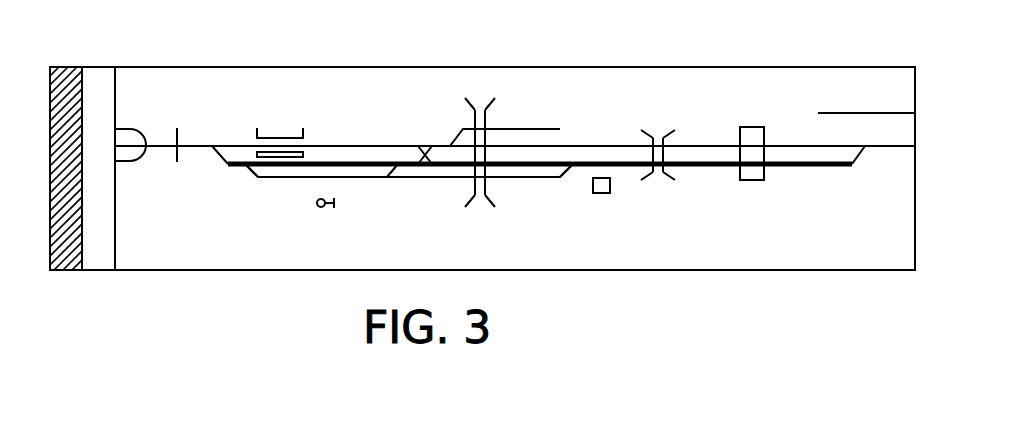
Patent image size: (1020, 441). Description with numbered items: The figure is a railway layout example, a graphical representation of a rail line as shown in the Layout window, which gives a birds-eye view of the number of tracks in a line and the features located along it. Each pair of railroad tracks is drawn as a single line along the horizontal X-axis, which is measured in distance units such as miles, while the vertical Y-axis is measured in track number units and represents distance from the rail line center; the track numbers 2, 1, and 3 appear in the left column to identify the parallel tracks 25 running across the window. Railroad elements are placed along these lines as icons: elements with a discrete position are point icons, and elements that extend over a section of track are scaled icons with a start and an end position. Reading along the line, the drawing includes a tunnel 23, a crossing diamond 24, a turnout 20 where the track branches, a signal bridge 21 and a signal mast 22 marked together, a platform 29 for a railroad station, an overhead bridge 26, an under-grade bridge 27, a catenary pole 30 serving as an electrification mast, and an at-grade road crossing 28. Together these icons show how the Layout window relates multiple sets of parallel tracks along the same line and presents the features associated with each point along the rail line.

The track number 1 is at (98, 143).
The track number 2 is at (98, 122).
The track number 3 is at (98, 167).
The turnout 20 is at (222, 137).
The signal bridge 21 is at (323, 187).
The signal mast 22 is at (409, 170).
The tunnel 23 is at (135, 107).
The crossing diamond 24 is at (192, 123).
The track 25 is at (539, 129).
The overhead bridge 26 is at (480, 97).
The under-grade bridge 27 is at (655, 132).
The at-grade road crossing 28 is at (757, 110).
The platform (railroad station) 29 is at (278, 123).
The catenary pole (electrification mast) 30 is at (598, 172).